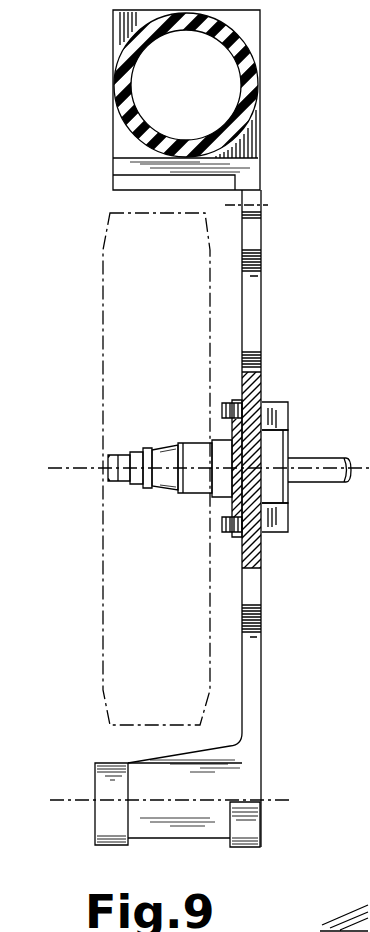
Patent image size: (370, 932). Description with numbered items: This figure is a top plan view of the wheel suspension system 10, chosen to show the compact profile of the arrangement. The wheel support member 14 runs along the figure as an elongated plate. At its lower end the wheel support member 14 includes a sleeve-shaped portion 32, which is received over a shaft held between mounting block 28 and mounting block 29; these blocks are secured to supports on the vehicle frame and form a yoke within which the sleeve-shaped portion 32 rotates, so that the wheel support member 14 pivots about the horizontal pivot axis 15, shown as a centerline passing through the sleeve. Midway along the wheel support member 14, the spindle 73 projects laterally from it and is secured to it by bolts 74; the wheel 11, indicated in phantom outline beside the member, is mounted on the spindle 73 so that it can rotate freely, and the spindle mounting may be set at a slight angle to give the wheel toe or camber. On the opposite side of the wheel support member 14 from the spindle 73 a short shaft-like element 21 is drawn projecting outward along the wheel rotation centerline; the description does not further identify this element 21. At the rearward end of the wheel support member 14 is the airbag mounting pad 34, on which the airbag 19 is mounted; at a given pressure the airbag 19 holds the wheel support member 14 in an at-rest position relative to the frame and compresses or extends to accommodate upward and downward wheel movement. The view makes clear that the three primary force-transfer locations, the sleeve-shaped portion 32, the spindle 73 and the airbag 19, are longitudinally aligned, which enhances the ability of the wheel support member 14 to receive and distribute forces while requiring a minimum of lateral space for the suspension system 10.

The wheel suspension system 10 is at (107, 469).
The wheel 11 is at (132, 559).
The wheel support member 14 is at (252, 316).
The horizontal pivot axis 15 is at (297, 800).
The airbag 19 is at (260, 91).
The pivot pin 21 is at (336, 460).
The mounting block 28 is at (98, 825).
The mounting block 29 is at (97, 780).
The sleeve-shaped portion 32 is at (186, 828).
The airbag mounting pad 34 is at (253, 28).
The spindle 73 is at (175, 490).
The bolts 74 is at (222, 408).